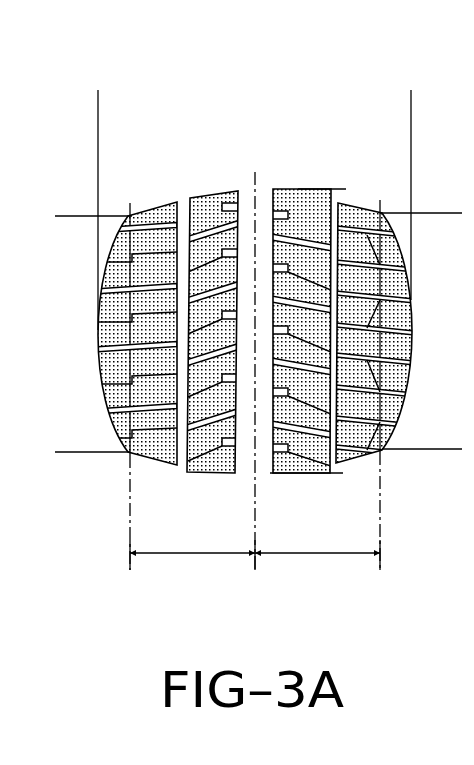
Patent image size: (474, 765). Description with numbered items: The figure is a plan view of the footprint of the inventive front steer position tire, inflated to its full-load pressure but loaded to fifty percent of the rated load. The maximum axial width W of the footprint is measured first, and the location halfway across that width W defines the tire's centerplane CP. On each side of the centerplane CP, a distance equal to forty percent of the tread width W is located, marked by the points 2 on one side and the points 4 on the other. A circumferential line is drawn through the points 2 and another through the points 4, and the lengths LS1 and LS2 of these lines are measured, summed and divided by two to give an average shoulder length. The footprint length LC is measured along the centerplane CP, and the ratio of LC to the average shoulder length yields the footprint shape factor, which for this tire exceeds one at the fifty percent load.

The point at 40% of tread width from centerplane 2 is at (381, 213).
The point at 40% of tread width from centerplane 4 is at (128, 216).
The maximum axial width of footprint W is at (411, 103).
The centerplane CP is at (254, 358).
The footprint length at centerplane LC is at (330, 189).
The shoulder line length LS1 is at (448, 213).
The shoulder line length LS2 is at (68, 216).